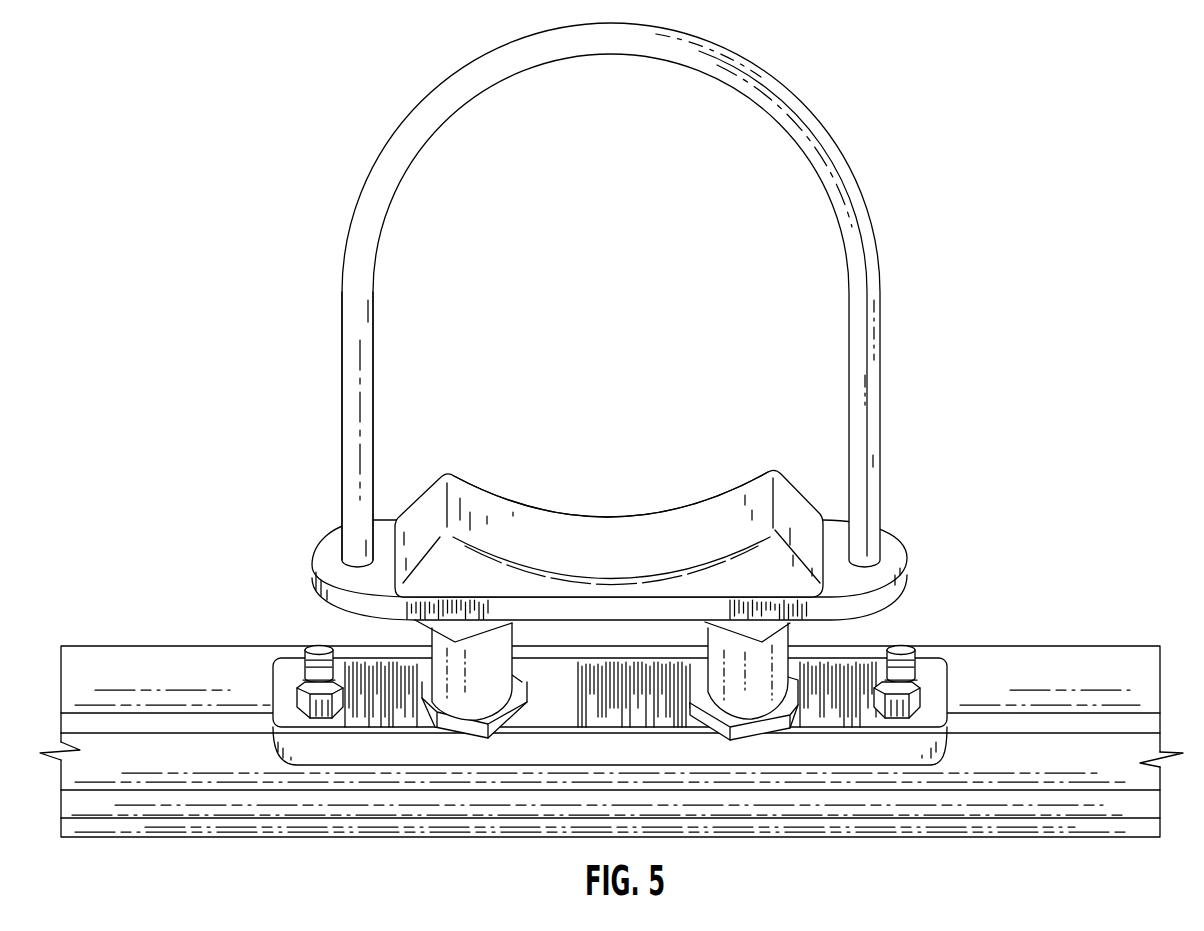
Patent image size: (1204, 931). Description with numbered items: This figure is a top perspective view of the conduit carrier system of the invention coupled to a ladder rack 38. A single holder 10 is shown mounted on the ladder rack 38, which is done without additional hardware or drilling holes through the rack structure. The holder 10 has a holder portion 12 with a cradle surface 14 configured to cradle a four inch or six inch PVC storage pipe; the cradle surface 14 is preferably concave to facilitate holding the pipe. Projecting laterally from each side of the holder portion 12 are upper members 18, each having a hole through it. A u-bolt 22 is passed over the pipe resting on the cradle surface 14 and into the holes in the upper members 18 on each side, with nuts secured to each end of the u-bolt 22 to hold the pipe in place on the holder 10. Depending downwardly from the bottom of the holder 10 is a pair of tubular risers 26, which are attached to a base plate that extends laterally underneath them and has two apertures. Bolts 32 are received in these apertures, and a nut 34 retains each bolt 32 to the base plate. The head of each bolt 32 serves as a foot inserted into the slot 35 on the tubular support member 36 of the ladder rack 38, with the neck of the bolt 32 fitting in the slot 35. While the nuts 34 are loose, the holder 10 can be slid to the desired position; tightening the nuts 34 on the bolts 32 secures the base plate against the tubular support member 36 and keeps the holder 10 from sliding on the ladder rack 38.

The holder 10 is at (574, 295).
The holder portion 12 is at (467, 573).
The cradle surface 14 is at (604, 530).
The upper members 18 is at (330, 557).
The u-bolt 22 is at (340, 380).
The tubular risers 26 is at (728, 662).
The bolt 32 is at (320, 647).
The nut 34 is at (305, 692).
The slot 35 is at (1030, 713).
The tubular support member 36 is at (1114, 668).
The ladder rack 38 is at (172, 674).